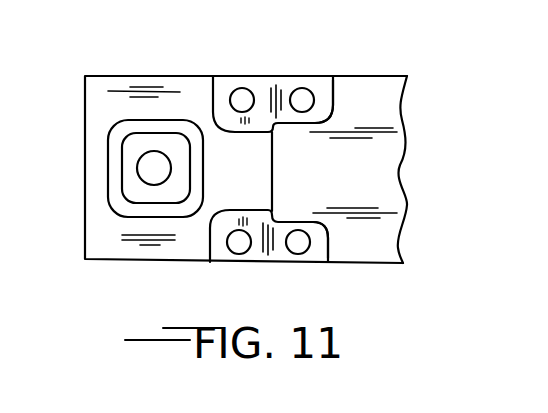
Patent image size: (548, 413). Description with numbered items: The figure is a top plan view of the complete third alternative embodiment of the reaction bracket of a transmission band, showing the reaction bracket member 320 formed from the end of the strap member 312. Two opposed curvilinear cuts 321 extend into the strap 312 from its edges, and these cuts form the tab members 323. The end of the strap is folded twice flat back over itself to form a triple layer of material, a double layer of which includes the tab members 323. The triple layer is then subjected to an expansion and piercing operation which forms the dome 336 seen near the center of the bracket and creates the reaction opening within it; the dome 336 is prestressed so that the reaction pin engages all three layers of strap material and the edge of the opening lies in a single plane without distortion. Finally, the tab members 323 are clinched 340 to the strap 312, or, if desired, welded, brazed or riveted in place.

The strap member 312 is at (390, 107).
The reaction bracket member 320 is at (111, 82).
The curvilinear cuts 321 is at (218, 88).
The tab members 323 is at (326, 90).
The dome 336 is at (136, 188).
The clinched 340 is at (238, 94).